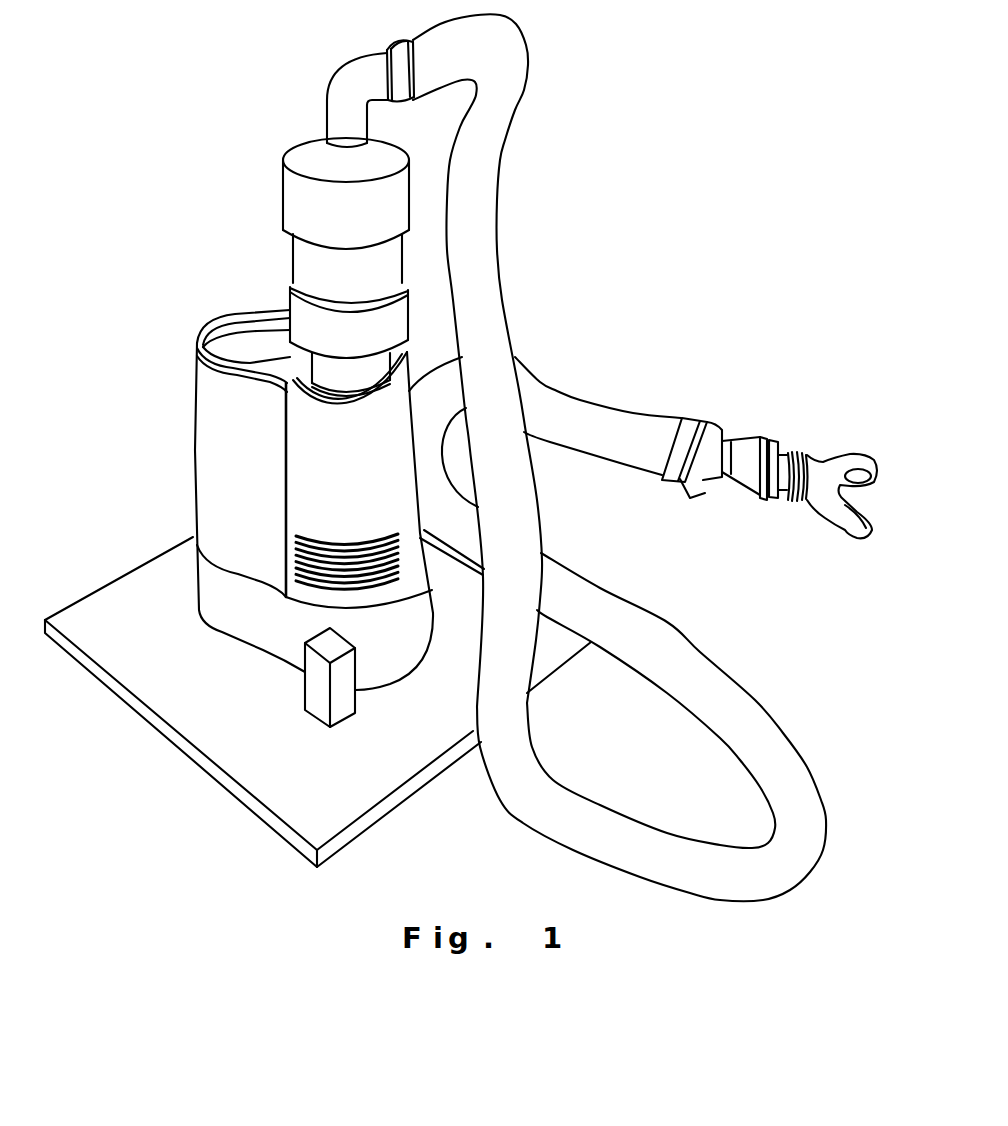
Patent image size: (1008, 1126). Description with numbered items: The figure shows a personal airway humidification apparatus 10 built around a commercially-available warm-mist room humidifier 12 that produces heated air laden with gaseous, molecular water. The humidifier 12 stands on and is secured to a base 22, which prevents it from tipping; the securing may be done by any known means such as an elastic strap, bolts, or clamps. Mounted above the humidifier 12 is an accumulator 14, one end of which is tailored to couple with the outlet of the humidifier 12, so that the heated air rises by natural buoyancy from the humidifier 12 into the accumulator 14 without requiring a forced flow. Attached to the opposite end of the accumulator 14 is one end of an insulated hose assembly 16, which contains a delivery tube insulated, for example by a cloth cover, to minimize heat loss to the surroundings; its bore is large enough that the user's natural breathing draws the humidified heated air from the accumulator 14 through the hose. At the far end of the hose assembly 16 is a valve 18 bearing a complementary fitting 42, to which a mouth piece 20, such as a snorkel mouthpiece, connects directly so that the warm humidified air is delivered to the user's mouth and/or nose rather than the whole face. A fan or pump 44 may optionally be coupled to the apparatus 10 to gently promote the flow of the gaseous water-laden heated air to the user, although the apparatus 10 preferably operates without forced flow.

The personal airway humidification apparatus 10 is at (461, 452).
The humidifier 12 is at (277, 500).
The accumulator 14 is at (317, 224).
The insulated hose assembly 16 is at (617, 457).
The valve 18 is at (735, 402).
The mouth piece 20 is at (833, 520).
The base 22 is at (318, 699).
The complementary fitting 42 is at (374, 52).
The fan or pump 44 is at (293, 677).